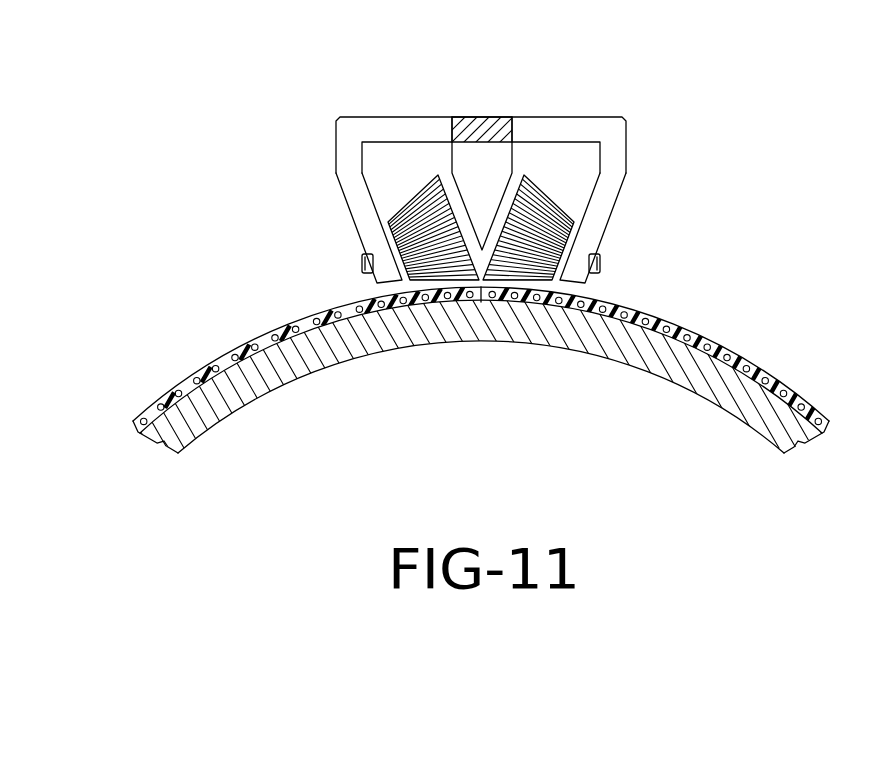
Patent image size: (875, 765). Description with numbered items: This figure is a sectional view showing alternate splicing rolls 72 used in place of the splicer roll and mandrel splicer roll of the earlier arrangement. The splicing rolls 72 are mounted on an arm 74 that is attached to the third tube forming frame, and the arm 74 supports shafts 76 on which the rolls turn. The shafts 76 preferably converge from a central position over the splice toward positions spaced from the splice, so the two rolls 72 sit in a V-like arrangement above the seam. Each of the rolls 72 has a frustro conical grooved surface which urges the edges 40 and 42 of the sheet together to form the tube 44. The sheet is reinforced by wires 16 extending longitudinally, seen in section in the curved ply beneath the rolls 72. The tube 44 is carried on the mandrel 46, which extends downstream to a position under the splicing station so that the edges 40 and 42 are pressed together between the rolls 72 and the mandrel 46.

The wires 16 is at (452, 346).
The edge 40 is at (508, 298).
The edge 42 is at (457, 298).
The tube 44 is at (268, 333).
The mandrel 46 is at (730, 390).
The splicing rolls 72 is at (425, 193).
The arm 74 is at (478, 134).
The shafts 76 is at (363, 267).